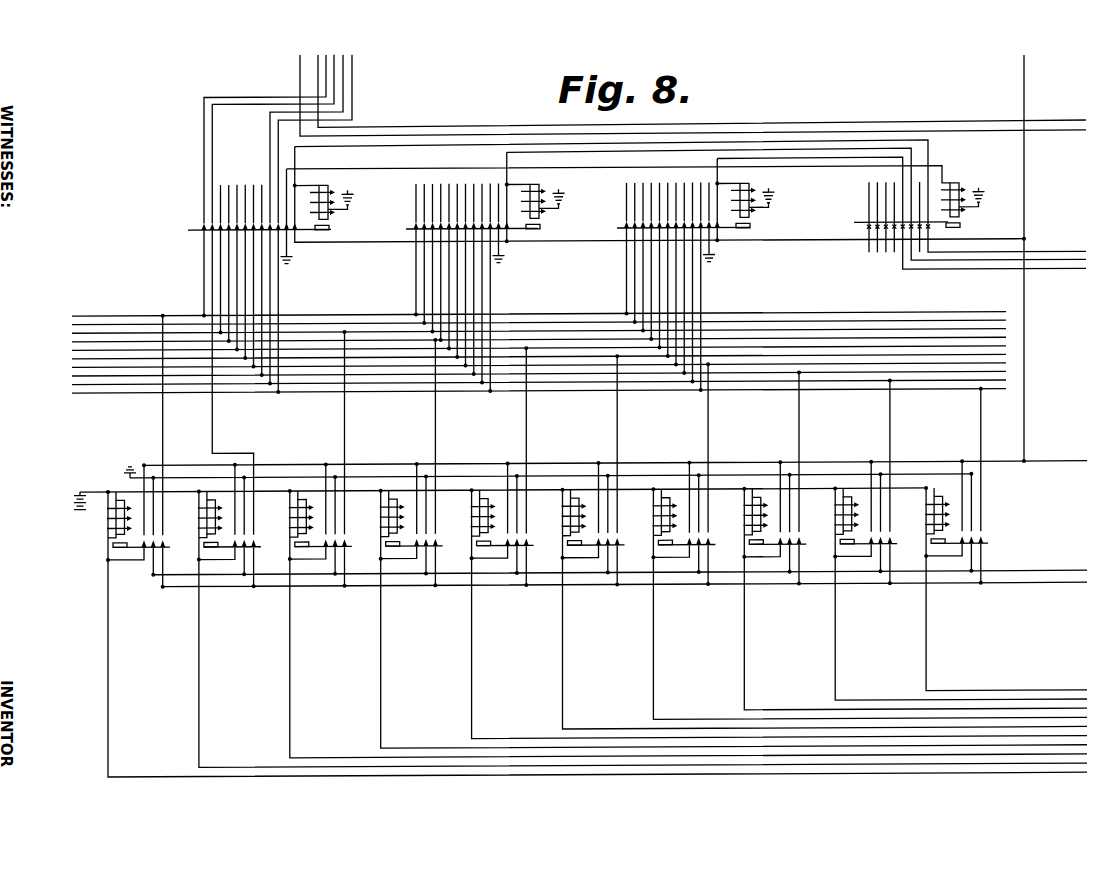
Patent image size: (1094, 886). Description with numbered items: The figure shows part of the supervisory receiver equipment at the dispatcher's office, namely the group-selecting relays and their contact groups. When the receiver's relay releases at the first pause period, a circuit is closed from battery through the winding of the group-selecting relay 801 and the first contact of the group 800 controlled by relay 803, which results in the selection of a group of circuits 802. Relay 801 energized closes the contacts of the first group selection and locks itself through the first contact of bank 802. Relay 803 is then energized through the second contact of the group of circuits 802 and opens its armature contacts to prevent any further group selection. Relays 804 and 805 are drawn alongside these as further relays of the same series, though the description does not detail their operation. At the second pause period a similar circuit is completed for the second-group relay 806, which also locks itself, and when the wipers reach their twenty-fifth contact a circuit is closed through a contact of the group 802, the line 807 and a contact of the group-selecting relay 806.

The group of contacts 800 is at (884, 217).
The group-selecting relay 801 is at (328, 188).
The group of circuits 802 is at (240, 228).
The relay 803 is at (958, 189).
The relay 804 is at (749, 188).
The relay 805 is at (539, 188).
The group relay 806 is at (112, 517).
The line 807 is at (163, 433).